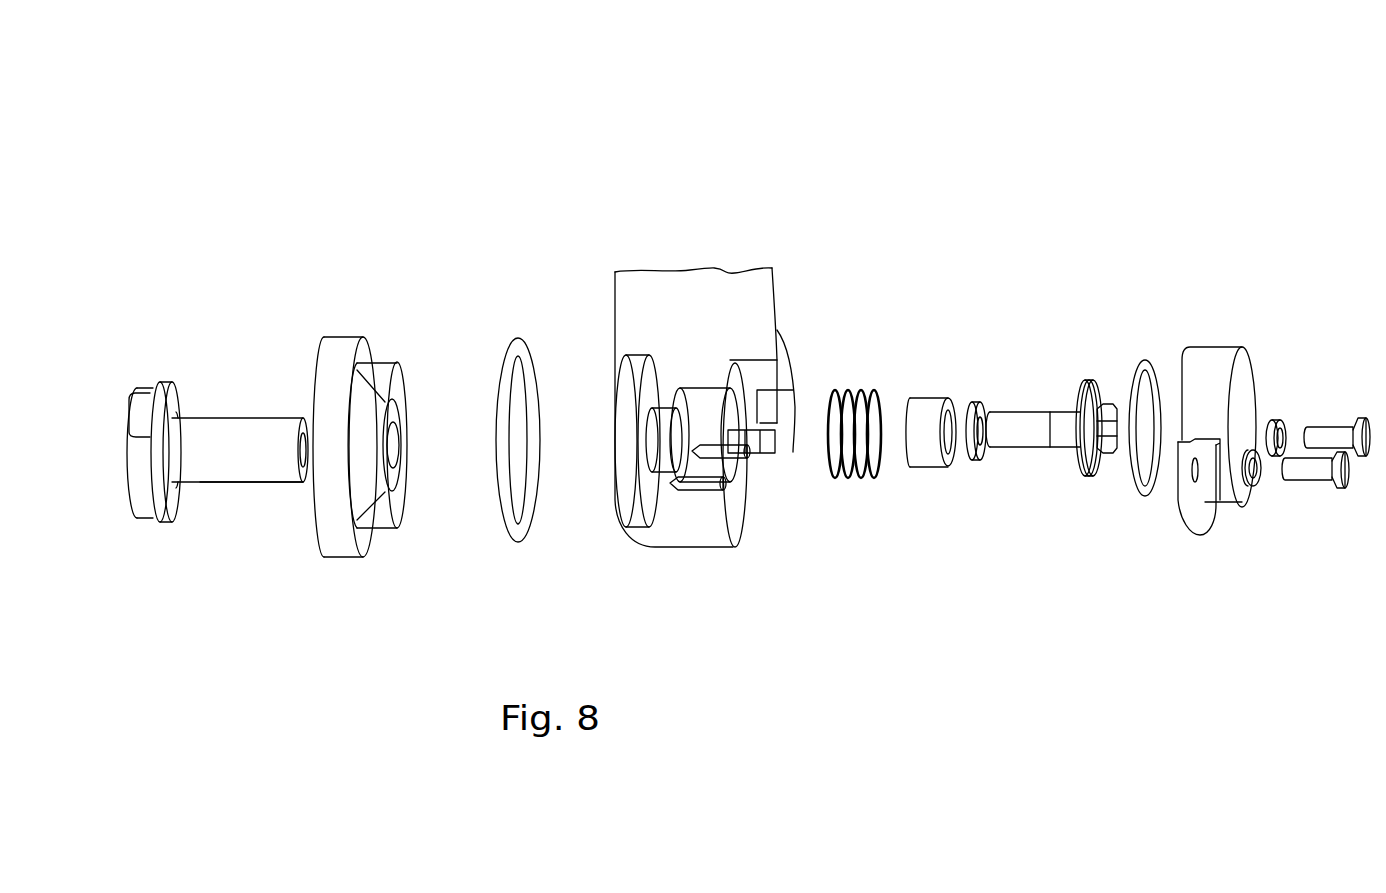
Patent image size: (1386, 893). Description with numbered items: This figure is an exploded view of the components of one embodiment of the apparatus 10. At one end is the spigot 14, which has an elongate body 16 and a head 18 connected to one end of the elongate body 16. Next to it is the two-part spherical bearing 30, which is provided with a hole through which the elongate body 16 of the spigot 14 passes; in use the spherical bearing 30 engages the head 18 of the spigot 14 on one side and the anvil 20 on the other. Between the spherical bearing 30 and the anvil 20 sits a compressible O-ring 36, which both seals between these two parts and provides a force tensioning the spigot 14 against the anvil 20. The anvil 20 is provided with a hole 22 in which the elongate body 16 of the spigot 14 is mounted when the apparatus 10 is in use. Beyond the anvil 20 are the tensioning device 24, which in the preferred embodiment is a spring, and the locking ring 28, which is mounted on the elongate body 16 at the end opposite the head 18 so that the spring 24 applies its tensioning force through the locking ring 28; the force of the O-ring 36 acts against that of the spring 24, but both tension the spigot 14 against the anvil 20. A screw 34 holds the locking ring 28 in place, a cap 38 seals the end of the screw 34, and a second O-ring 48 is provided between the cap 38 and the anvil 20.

The apparatus 10 is at (446, 139).
The spigot 14 is at (224, 440).
The elongate body 16 is at (243, 470).
The head 18 is at (138, 492).
The anvil 20 is at (702, 285).
The hole 22 is at (686, 466).
The tensioning device 24 is at (858, 392).
The locking ring 28 is at (1082, 468).
The two-part spherical bearing 30 is at (338, 340).
The screw 34 is at (1028, 416).
The O-ring 36 is at (513, 340).
The cap 38 is at (1222, 348).
The second O-ring 48 is at (1150, 360).